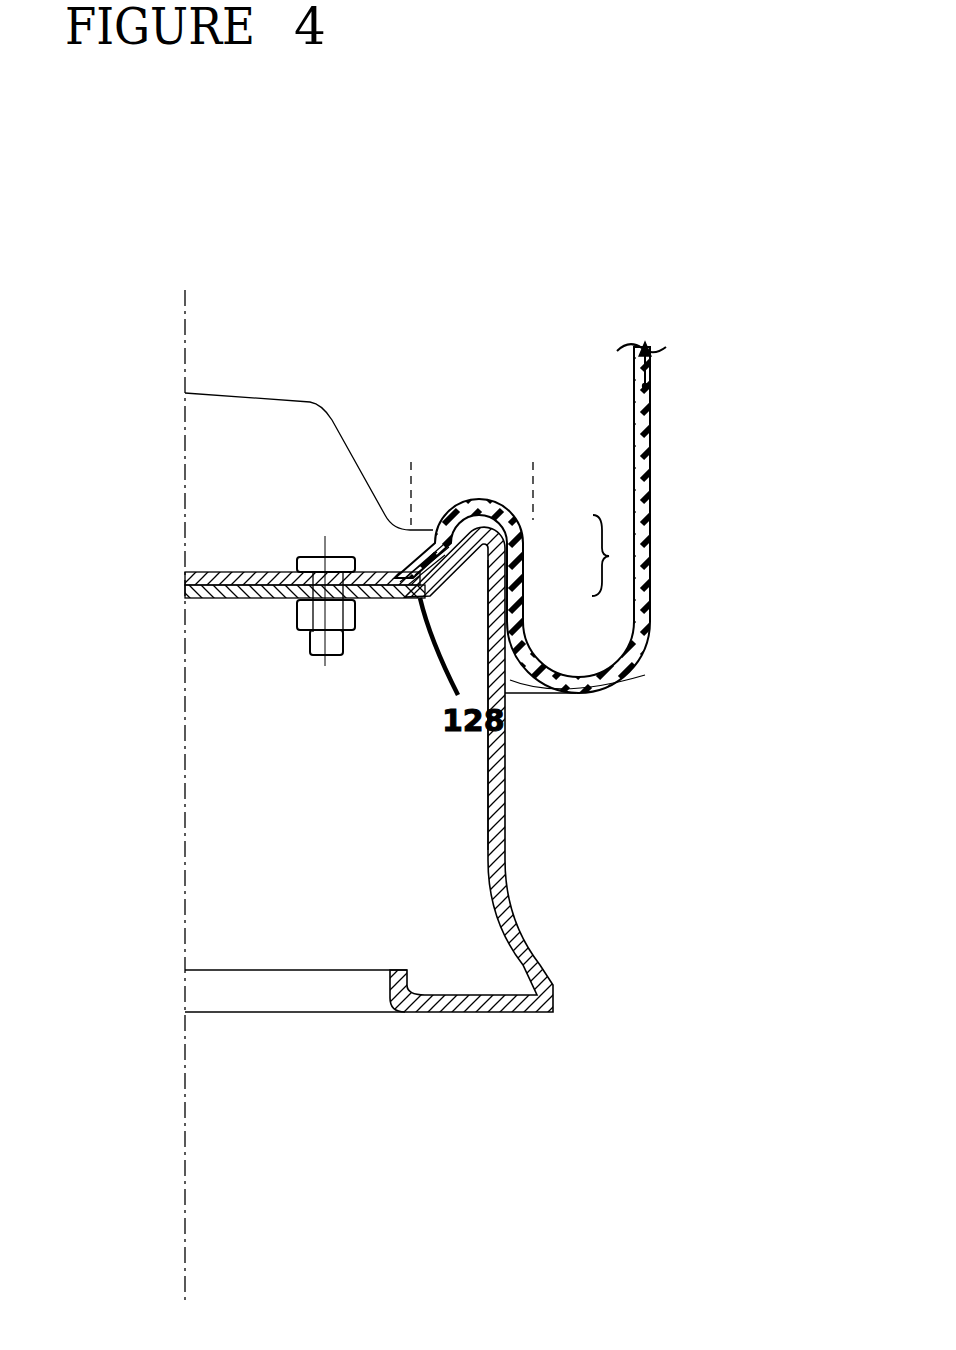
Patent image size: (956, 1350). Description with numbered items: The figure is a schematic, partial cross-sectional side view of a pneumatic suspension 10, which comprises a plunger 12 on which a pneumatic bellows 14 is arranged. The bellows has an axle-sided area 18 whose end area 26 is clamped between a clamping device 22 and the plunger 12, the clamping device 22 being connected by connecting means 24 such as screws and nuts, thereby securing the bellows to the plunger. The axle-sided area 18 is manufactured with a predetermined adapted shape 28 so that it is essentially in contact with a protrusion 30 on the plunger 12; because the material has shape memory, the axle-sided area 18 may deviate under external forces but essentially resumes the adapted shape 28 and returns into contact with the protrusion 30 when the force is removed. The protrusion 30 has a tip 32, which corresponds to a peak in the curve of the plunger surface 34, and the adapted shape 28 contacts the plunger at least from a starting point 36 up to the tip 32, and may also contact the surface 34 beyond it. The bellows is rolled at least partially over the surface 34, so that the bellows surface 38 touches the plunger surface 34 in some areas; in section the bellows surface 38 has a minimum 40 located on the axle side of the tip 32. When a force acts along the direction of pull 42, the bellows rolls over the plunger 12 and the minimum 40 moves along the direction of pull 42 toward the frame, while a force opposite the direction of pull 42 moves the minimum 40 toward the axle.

The pneumatic suspension 10 is at (504, 263).
The plunger 12 is at (490, 769).
The pneumatic bellows 14 is at (651, 492).
The axle-sided area 18 is at (617, 555).
The clamping device 22 is at (380, 570).
The connecting means 24 is at (355, 625).
The end area 26 is at (440, 525).
The adapted shape 28 is at (420, 468).
The protrusion 30 is at (523, 560).
The tip 32 is at (478, 545).
The surface 34 is at (512, 757).
The starting point 36 is at (429, 668).
The surface 38 is at (641, 660).
The minimum 40 is at (573, 694).
The direction of pull 42 is at (670, 341).